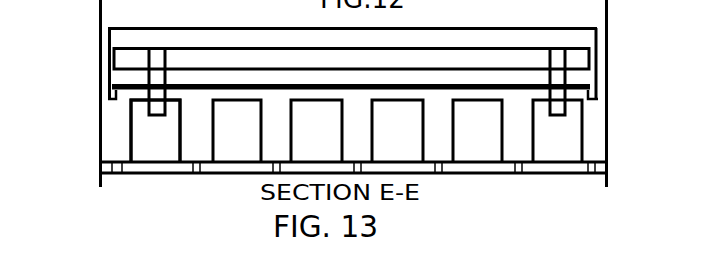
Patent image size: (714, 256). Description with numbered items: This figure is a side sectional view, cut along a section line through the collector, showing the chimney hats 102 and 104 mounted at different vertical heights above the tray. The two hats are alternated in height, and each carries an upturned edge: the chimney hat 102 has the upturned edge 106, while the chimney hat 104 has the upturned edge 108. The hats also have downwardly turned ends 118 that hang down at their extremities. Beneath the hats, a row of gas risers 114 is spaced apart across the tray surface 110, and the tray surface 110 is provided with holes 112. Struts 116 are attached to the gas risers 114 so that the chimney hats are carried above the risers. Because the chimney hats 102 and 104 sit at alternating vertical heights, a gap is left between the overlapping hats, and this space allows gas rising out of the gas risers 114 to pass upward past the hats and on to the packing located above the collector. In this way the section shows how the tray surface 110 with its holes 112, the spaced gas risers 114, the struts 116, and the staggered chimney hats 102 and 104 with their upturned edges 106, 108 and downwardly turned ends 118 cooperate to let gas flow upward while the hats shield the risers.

The chimney hat 102 is at (577, 35).
The chimney hat 104 is at (253, 77).
The upturned edge 106 is at (167, 32).
The upturned edge 108 is at (577, 62).
The tray surface 110 is at (557, 172).
The holes 112 is at (100, 165).
The gas risers 114 is at (148, 137).
The struts 116 is at (131, 118).
The downwardly turned ends 118 is at (110, 92).